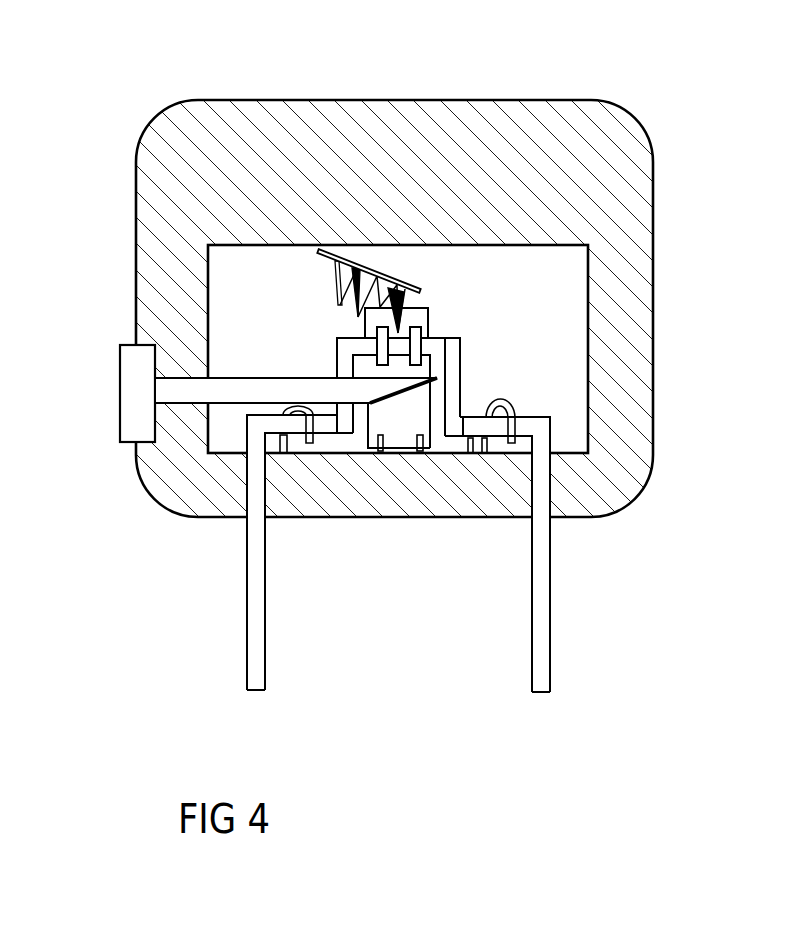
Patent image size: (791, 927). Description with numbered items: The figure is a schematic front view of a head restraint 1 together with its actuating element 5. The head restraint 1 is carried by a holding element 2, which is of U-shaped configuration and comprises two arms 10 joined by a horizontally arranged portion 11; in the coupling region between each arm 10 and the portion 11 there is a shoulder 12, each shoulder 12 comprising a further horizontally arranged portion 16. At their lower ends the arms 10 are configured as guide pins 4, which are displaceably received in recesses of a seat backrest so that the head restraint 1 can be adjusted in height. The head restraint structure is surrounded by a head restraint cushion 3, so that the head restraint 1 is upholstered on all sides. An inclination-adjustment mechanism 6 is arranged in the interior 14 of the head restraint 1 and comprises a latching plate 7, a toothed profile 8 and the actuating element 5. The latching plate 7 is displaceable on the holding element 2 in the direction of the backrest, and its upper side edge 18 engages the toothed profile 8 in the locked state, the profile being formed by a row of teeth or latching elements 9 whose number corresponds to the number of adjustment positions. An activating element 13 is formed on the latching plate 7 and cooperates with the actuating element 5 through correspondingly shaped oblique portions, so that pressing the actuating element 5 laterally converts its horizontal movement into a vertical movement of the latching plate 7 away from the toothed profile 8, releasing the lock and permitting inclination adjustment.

The head restraint 1 is at (397, 107).
The holding element 2 is at (547, 558).
The head restraint cushion 3 is at (642, 193).
The guide pins 4 is at (255, 683).
The actuating element 5 is at (137, 393).
The inclination-adjustment mechanism 6 is at (600, 334).
The latching plate 7 is at (423, 317).
The toothed profile 8 is at (397, 282).
The latching elements 9 is at (342, 281).
The arms 10 is at (255, 578).
The horizontally arranged portion 11 is at (347, 347).
The shoulder 12 is at (280, 425).
The activating element 13 is at (400, 405).
The interior 14 is at (563, 300).
The further horizontally arranged portion 16 is at (327, 427).
The upper side edge 18 is at (355, 312).